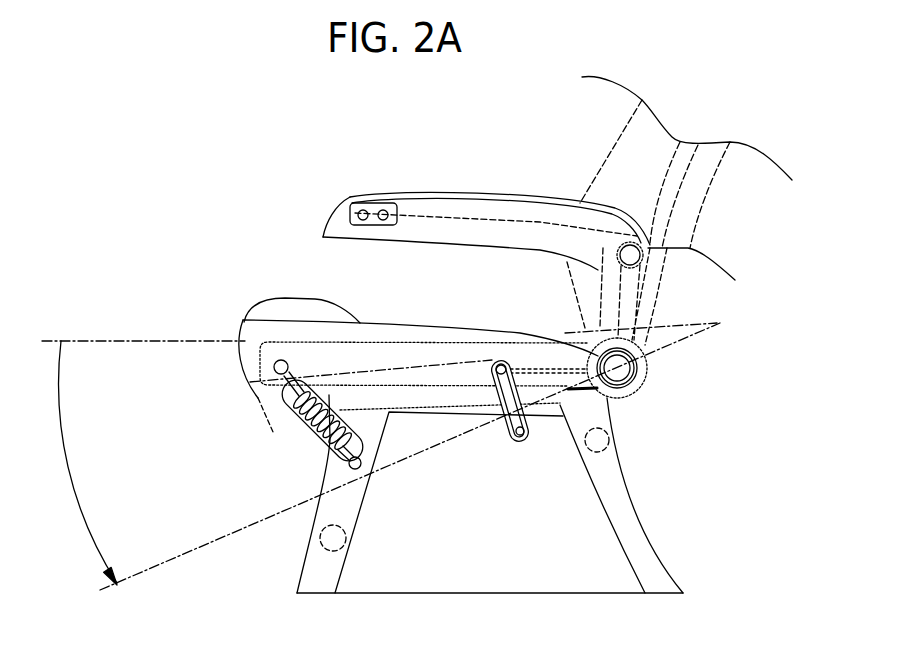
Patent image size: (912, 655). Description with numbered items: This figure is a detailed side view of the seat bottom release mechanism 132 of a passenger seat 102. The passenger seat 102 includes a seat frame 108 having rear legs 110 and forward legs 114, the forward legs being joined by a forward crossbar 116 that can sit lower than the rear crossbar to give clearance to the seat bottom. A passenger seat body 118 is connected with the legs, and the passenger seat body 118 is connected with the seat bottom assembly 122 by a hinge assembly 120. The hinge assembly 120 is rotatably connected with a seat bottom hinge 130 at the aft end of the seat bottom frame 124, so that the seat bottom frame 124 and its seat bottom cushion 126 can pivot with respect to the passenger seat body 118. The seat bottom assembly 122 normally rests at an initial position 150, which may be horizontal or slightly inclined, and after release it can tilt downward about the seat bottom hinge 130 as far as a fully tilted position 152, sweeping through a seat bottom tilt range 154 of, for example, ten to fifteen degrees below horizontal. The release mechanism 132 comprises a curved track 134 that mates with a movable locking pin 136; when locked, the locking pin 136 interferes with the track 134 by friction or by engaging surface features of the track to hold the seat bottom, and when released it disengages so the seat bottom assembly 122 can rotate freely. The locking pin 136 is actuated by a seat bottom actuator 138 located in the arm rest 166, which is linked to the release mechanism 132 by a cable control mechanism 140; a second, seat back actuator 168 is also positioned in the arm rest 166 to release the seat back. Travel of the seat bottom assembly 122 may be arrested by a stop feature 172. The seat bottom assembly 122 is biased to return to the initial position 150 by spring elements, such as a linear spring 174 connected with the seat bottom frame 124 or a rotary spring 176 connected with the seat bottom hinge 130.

The passenger seat 102 is at (190, 115).
The seat frame 108 is at (650, 492).
The rear legs 110 is at (638, 535).
The forward legs 114 is at (318, 555).
The forward crossbar 116 is at (348, 538).
The passenger seat body 118 is at (703, 250).
The hinge assembly 120 is at (648, 380).
The seat bottom assembly 122 is at (222, 315).
The seat bottom frame 124 is at (270, 359).
The seat bottom cushion 126 is at (400, 321).
The seat bottom hinge 130 is at (628, 395).
The seat bottom release mechanism 132 is at (478, 447).
The curved track 134 is at (512, 440).
The locking pin 136 is at (497, 362).
The seat bottom actuator 138 is at (382, 208).
The cable control mechanism 140 is at (462, 213).
The initial position 150 is at (150, 342).
The fully tilted position 152 is at (205, 548).
The seat bottom tilt range 154 is at (84, 463).
The arm rest 166 is at (507, 195).
The seat back actuator 168 is at (353, 200).
The stop feature 172 is at (524, 436).
The linear spring 174 is at (287, 437).
The rotary spring 176 is at (637, 367).